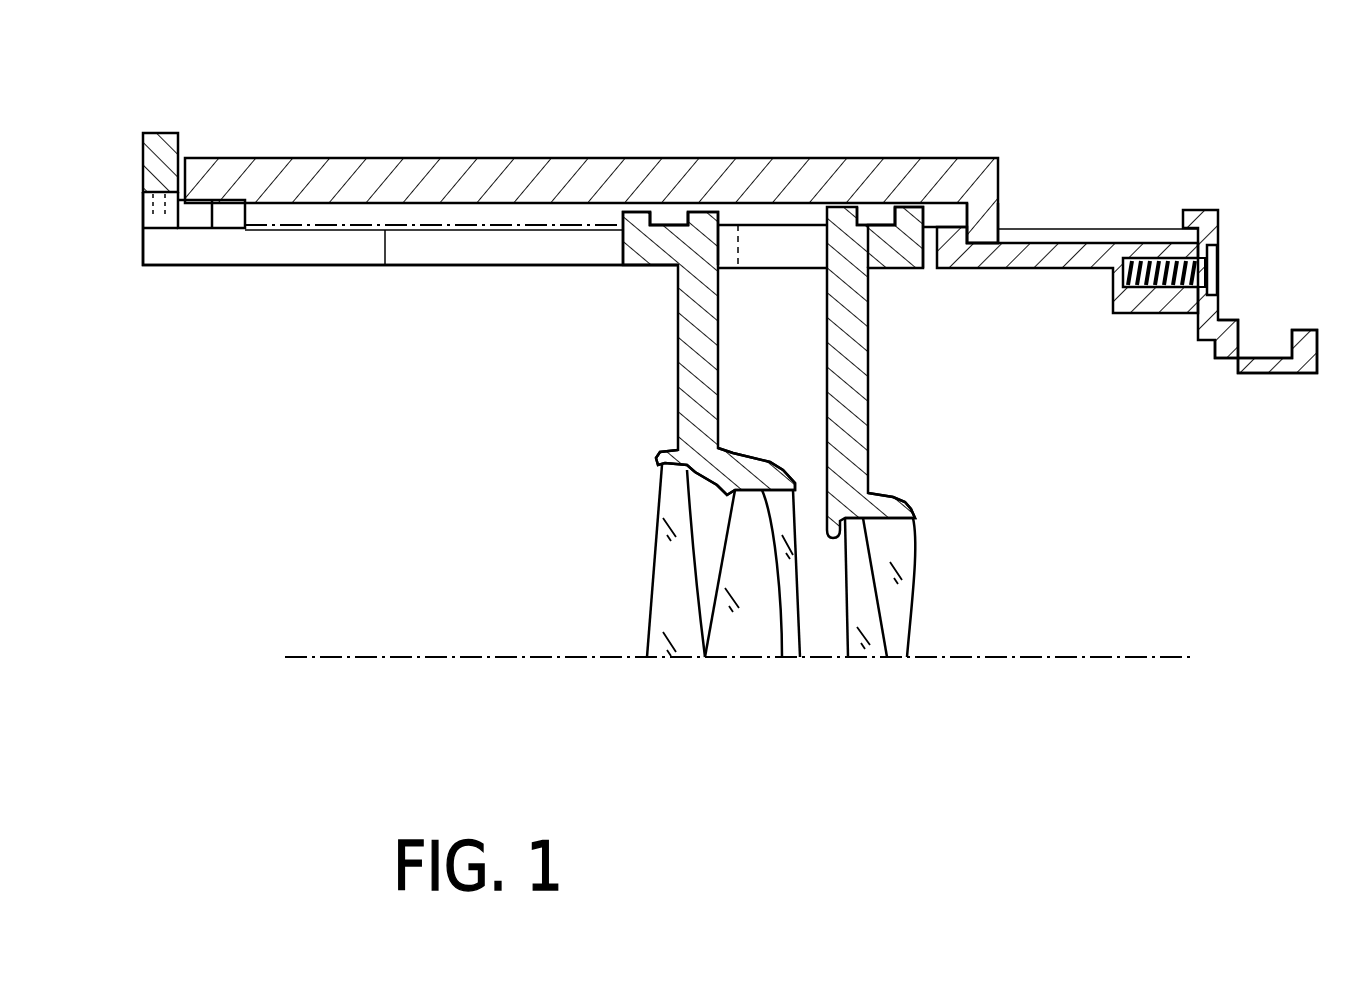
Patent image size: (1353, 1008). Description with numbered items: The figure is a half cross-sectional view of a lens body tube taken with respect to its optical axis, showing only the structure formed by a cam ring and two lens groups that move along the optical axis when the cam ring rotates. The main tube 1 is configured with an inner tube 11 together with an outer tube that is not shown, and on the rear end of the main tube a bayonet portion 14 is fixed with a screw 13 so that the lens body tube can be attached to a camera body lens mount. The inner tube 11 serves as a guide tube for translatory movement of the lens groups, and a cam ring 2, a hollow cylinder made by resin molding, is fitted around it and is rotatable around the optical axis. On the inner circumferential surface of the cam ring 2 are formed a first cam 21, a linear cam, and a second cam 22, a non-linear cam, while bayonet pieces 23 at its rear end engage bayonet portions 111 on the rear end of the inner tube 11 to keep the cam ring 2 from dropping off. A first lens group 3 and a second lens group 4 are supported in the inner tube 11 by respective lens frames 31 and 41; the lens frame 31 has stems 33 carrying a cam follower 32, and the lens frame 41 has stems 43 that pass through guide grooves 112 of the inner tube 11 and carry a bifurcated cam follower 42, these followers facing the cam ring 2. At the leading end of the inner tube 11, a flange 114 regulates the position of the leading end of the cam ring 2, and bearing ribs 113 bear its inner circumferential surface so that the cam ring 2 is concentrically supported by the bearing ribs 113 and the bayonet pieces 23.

The main tube 1 is at (1103, 80).
The cam ring 2 is at (380, 170).
The first lens group 3 is at (722, 676).
The second lens group 4 is at (884, 676).
The inner tube 11 is at (1088, 252).
The screw 13 is at (1215, 270).
The bayonet portion 14 is at (1305, 363).
The first cam 21 is at (667, 212).
The second cam 22 is at (872, 213).
The bayonet piece 23 is at (1000, 218).
The lens frame 31 is at (688, 476).
The cam follower 32 is at (645, 250).
The stem 33 is at (683, 377).
The lens frame 41 is at (901, 501).
The cam follower 42 is at (918, 258).
The stem 43 is at (850, 435).
The bayonet portion 111 is at (1130, 238).
The guide groove 112 is at (285, 253).
The bearing rib 113 is at (193, 195).
The flange 114 is at (147, 145).